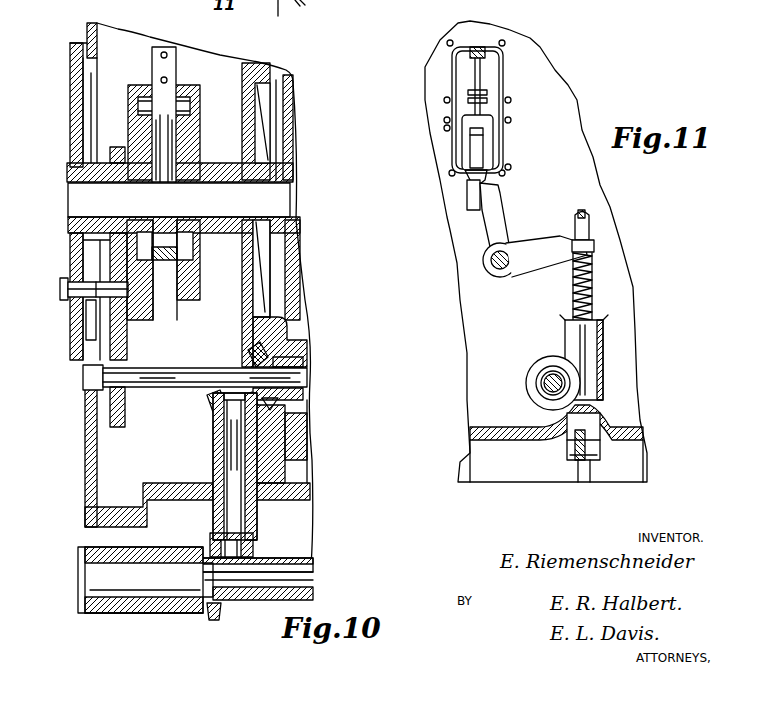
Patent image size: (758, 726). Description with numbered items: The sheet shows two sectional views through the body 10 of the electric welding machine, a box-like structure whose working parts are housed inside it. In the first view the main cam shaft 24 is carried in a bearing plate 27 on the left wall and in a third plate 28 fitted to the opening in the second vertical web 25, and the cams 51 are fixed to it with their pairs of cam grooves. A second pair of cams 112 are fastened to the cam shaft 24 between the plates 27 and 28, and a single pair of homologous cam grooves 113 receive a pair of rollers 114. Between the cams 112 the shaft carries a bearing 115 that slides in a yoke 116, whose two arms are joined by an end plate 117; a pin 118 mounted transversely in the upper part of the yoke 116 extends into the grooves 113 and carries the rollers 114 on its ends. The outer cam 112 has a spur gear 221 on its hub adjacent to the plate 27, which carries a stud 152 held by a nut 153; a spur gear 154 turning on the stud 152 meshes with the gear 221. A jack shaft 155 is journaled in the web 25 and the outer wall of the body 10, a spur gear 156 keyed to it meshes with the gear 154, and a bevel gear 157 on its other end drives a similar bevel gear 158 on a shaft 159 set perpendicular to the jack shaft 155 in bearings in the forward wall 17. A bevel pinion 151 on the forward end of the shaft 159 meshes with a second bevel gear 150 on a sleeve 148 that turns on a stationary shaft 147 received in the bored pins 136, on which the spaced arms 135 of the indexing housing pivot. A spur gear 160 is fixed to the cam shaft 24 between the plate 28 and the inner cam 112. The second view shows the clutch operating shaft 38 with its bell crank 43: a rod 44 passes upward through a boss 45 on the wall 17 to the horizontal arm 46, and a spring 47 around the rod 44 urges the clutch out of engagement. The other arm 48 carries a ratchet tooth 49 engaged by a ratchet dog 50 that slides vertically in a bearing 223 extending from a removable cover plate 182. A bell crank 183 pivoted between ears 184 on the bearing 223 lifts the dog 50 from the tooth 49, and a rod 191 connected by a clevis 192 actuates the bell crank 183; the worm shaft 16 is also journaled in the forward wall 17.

In FIG. 10, the body portion 10 is at (85, 440).
In FIG. 11, the body portion 10 is at (556, 412).
In FIG. 11, the worm shaft 16 is at (536, 382).
In FIG. 11, the forward wall 17 is at (556, 442).
In FIG. 10, the main cam shaft 24 is at (179, 200).
In FIG. 10, the second vertical web 25 is at (288, 348).
In FIG. 10, the bearing plate 27 is at (70, 112).
In FIG. 10, the third plate 28 is at (242, 330).
In FIG. 11, the clutch operating shaft 38 is at (500, 277).
In FIG. 11, the bell crank 43 is at (535, 240).
In FIG. 11, the rod 44 is at (592, 212).
In FIG. 11, the boss 45 is at (598, 330).
In FIG. 11, the horizontal arm 46 is at (594, 246).
In FIG. 11, the spring 47 is at (595, 282).
In FIG. 11, the other arm 48 is at (498, 205).
In FIG. 11, the ratchet tooth 49 is at (467, 200).
In FIG. 11, the ratchet dog 50 is at (490, 172).
In FIG. 10, the cams 51 is at (303, 305).
In FIG. 10, the second pair of cams 112 is at (147, 322).
In FIG. 10, the cam grooves 113 is at (190, 256).
In FIG. 10, the rollers 114 is at (185, 95).
In FIG. 10, the bearing 115 is at (163, 262).
In FIG. 10, the yoke 116 is at (168, 145).
In FIG. 10, the end plate 117 is at (198, 298).
In FIG. 10, the pin 118 is at (158, 97).
In FIG. 10, the spaced arms 135 is at (185, 615).
In FIG. 10, the pins 136 is at (78, 556).
In FIG. 10, the stationary shaft 147 is at (305, 573).
In FIG. 10, the sleeve 148 is at (313, 598).
In FIG. 10, the second bevel gear 150 is at (215, 621).
In FIG. 10, the bevel pinion 151 is at (255, 549).
In FIG. 10, the stud 152 is at (110, 315).
In FIG. 10, the nut 153 is at (62, 278).
In FIG. 10, the spur gear 154 is at (100, 335).
In FIG. 10, the jack shaft 155 is at (185, 380).
In FIG. 10, the spur gear 156 is at (125, 428).
In FIG. 10, the bevel gear 157 is at (288, 416).
In FIG. 10, the bevel gear 158 is at (288, 452).
In FIG. 10, the shaft 159 is at (240, 483).
In FIG. 10, the spur gear 160 is at (235, 165).
In FIG. 11, the removable cover plate 182 is at (495, 120).
In FIG. 11, the bell crank 183 is at (480, 88).
In FIG. 11, the ears 184 is at (462, 124).
In FIG. 11, the rod 191 is at (503, 55).
In FIG. 11, the clevis 192 is at (483, 48).
In FIG. 10, the spur gear 221 is at (110, 152).
In FIG. 11, the bearing 223 is at (478, 148).